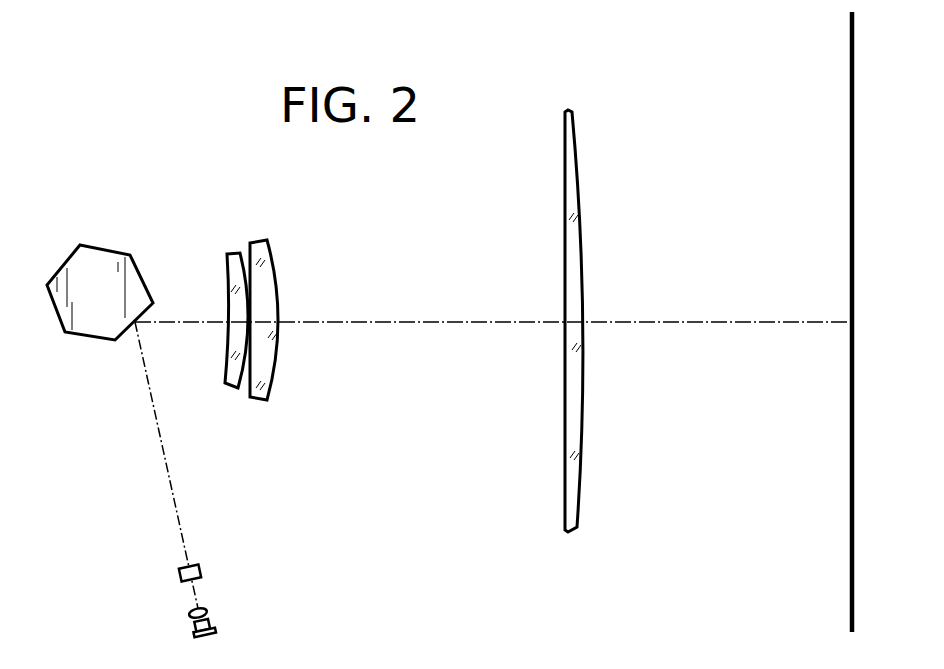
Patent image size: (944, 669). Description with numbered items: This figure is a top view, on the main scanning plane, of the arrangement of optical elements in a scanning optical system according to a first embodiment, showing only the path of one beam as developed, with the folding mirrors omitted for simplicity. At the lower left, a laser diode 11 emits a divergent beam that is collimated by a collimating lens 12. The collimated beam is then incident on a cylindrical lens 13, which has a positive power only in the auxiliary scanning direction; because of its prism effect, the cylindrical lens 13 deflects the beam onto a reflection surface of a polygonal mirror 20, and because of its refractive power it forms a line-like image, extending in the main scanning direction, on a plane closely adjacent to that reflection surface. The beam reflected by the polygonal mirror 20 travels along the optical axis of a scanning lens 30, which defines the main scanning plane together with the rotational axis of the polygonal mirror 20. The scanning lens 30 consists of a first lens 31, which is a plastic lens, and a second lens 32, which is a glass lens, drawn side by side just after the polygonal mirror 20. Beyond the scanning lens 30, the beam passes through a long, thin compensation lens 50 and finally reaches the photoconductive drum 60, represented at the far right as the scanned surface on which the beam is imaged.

The laser diode 11 is at (210, 625).
The collimating lens 12 is at (200, 568).
The cylindrical lens 13 is at (190, 612).
The polygonal mirror 20 is at (113, 262).
The scanning lens 30 is at (249, 364).
The first lens 31 is at (230, 389).
The second lens 32 is at (270, 345).
The compensation lens 50 is at (568, 463).
The photoconductive drum 60 is at (850, 495).